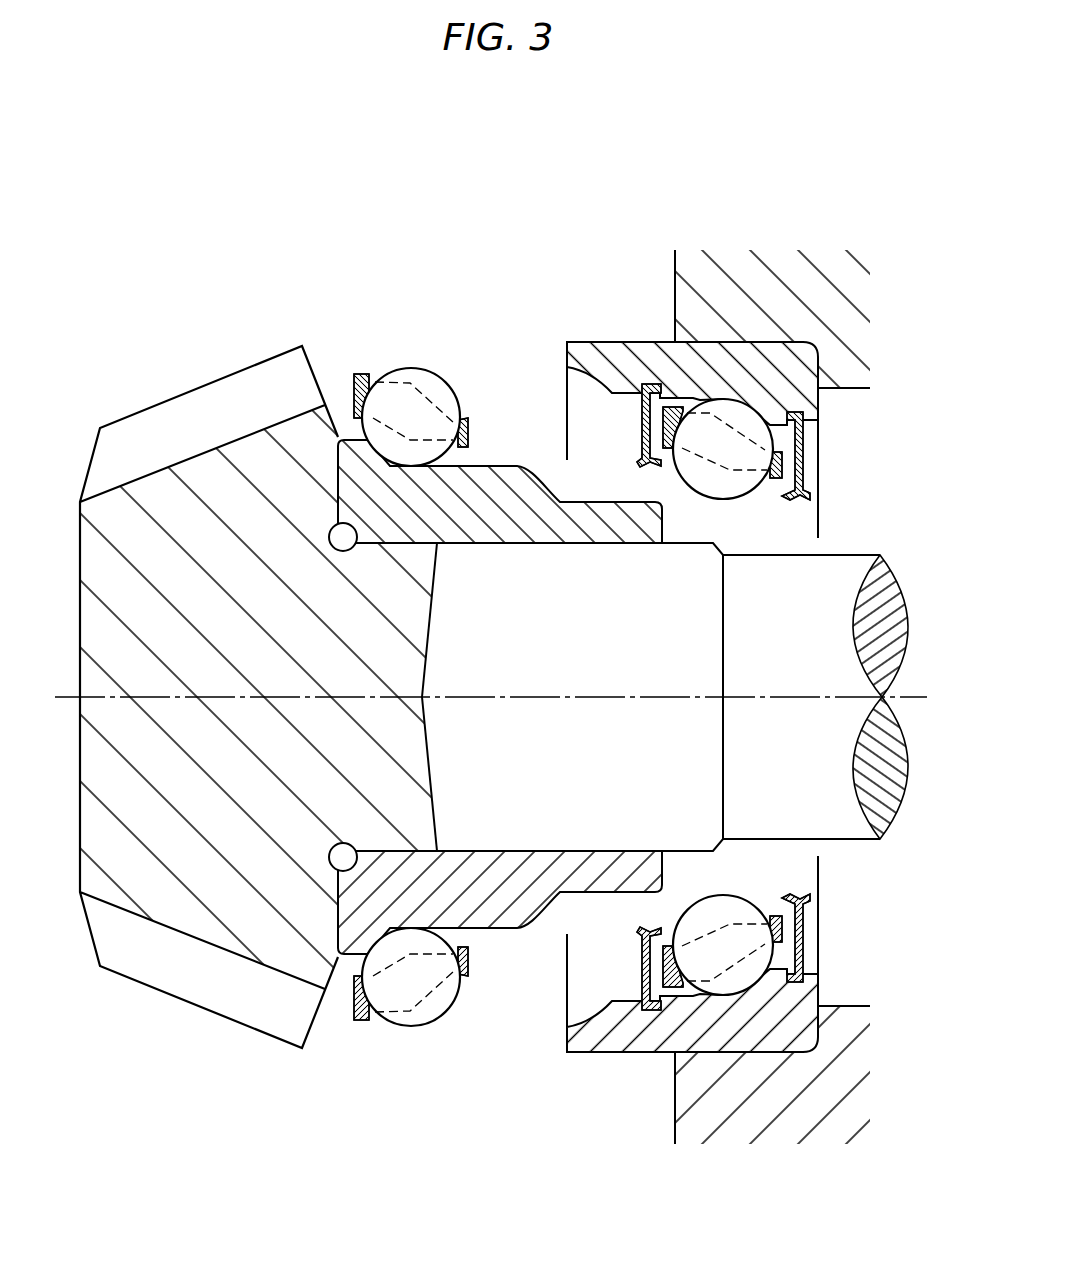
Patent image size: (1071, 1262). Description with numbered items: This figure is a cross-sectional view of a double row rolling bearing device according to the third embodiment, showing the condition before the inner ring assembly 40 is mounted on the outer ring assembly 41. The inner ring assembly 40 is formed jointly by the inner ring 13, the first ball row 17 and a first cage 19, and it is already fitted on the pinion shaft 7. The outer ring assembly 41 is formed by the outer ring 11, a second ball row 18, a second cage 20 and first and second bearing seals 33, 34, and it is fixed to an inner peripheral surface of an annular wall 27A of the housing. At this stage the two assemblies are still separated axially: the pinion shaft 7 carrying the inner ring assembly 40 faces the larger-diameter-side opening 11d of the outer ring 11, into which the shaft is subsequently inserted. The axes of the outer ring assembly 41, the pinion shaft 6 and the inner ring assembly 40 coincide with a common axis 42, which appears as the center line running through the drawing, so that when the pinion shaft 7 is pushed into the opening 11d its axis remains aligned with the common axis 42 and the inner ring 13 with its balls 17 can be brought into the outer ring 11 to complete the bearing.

The pinion shaft 6 is at (195, 520).
The pinion shaft 7 is at (838, 808).
The outer ring 11 is at (593, 353).
The larger-diameter-side opening 11d is at (528, 978).
The inner ring 13 is at (487, 490).
The first ball row 17 is at (348, 271).
The second ball row 18 is at (728, 410).
The first cage 19 is at (358, 372).
The second cage 20 is at (662, 400).
The annular wall 27A is at (800, 304).
The first bearing seal 33 is at (631, 393).
The second bearing seal 34 is at (788, 581).
The inner ring assembly 40 is at (495, 626).
The outer ring assembly 41 is at (649, 596).
The common axis 42 is at (533, 697).